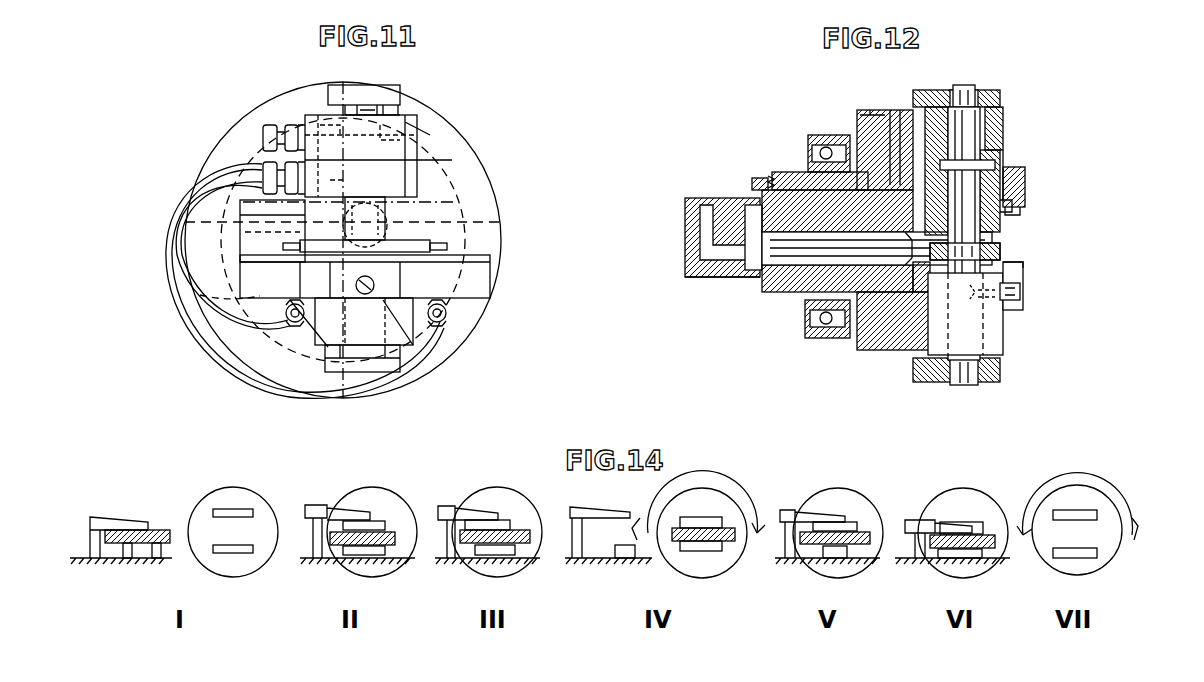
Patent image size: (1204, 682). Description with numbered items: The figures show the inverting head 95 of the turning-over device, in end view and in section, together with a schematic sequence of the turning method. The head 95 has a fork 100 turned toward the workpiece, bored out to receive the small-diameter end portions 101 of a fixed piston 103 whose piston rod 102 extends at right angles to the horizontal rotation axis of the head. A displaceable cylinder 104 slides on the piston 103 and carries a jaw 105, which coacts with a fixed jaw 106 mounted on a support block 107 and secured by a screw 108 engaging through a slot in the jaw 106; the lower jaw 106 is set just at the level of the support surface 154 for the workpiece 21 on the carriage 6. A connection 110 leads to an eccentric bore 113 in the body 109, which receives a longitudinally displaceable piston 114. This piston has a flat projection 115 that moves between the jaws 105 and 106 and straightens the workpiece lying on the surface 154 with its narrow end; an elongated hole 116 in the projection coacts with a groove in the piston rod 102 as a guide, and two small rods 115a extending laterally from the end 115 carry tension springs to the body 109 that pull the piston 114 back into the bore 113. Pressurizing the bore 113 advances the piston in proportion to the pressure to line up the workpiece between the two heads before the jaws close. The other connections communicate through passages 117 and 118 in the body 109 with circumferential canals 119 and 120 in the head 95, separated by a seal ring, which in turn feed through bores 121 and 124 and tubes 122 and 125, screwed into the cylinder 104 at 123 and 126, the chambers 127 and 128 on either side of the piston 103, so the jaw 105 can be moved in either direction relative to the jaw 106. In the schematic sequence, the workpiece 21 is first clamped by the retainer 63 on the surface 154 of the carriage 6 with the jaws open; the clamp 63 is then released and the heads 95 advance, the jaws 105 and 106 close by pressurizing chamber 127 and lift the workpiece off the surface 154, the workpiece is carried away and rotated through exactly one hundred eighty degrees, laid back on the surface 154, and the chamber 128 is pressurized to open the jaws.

In FIG. 11, the fork 100 is at (398, 92).
In FIG. 12, the fork 100 is at (1000, 97).
In FIG. 12, the small-diameter end portions 101 is at (965, 95).
In FIG. 12, the piston rod 102 is at (970, 222).
In FIG. 12, the fixed piston 103 is at (995, 165).
In FIG. 11, the displaceable cylinder 104 is at (402, 124).
In FIG. 12, the displaceable cylinder 104 is at (1003, 140).
In FIG. 12, the jaw 105 is at (1012, 182).
In FIG. 14, the jaw 105 is at (230, 509).
In FIG. 11, the fixed jaw 106 is at (450, 318).
In FIG. 12, the fixed jaw 106 is at (1012, 272).
In FIG. 14, the fixed jaw 106 is at (235, 553).
In FIG. 12, the support block 107 is at (990, 340).
In FIG. 11, the screw 108 is at (441, 318).
In FIG. 12, the screw 108 is at (1005, 292).
In FIG. 12, the body 109 is at (720, 278).
In FIG. 12, the connection 110 is at (685, 225).
In FIG. 12, the eccentric bore 113 is at (755, 262).
In FIG. 12, the piston 114 is at (785, 245).
In FIG. 11, the flat projection 115 is at (330, 250).
In FIG. 12, the flat projection 115 is at (1000, 251).
In FIG. 11, the small rods 115a is at (447, 250).
In FIG. 12, the elongated hole 116 is at (937, 250).
In FIG. 11, the passage 117 is at (245, 232).
In FIG. 12, the passage 117 is at (760, 178).
In FIG. 11, the passage 118 is at (500, 222).
In FIG. 12, the passage 118 is at (775, 180).
In FIG. 12, the circumferential canal 119 is at (850, 150).
In FIG. 12, the circumferential canal 120 is at (895, 110).
In FIG. 11, the bore 121 is at (462, 288).
In FIG. 11, the tube 122 is at (225, 375).
In FIG. 11, the screw-in point 123 is at (268, 126).
In FIG. 11, the bore 124 is at (245, 295).
In FIG. 11, the tube 125 is at (262, 318).
In FIG. 11, the screw-in point 126 is at (268, 178).
In FIG. 11, the chamber 127 is at (418, 138).
In FIG. 12, the chamber 127 is at (988, 150).
In FIG. 11, the chamber 128 is at (452, 160).
In FIG. 12, the chamber 128 is at (1005, 207).
In FIG. 12, the inverting head 95 is at (880, 112).
In FIG. 14, the inverting head 95 is at (252, 497).
In FIG. 14, the retainer 63 is at (122, 516).
In FIG. 14, the workpiece 21 is at (155, 530).
In FIG. 14, the carriage 6 is at (120, 558).
In FIG. 14, the support surface 154 is at (160, 558).